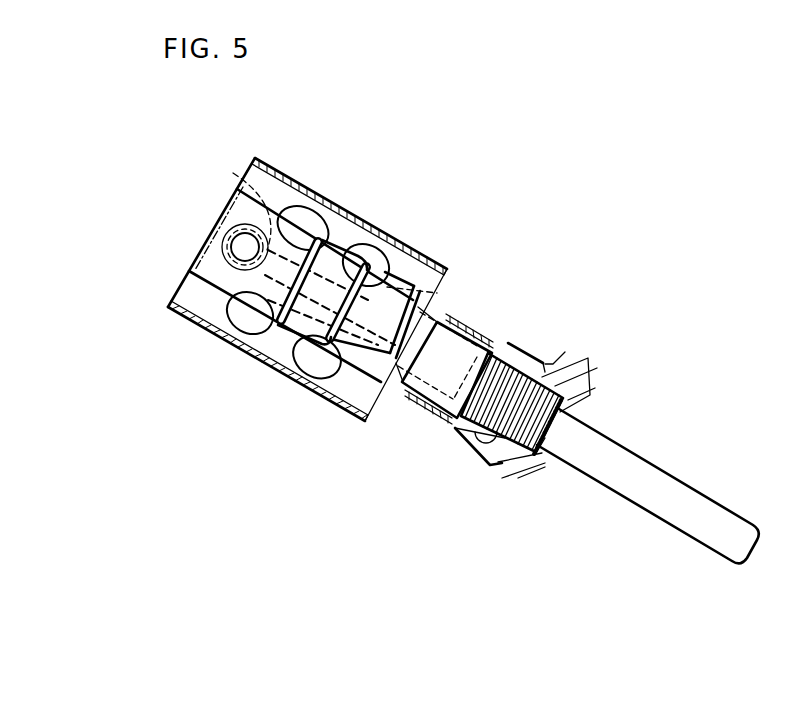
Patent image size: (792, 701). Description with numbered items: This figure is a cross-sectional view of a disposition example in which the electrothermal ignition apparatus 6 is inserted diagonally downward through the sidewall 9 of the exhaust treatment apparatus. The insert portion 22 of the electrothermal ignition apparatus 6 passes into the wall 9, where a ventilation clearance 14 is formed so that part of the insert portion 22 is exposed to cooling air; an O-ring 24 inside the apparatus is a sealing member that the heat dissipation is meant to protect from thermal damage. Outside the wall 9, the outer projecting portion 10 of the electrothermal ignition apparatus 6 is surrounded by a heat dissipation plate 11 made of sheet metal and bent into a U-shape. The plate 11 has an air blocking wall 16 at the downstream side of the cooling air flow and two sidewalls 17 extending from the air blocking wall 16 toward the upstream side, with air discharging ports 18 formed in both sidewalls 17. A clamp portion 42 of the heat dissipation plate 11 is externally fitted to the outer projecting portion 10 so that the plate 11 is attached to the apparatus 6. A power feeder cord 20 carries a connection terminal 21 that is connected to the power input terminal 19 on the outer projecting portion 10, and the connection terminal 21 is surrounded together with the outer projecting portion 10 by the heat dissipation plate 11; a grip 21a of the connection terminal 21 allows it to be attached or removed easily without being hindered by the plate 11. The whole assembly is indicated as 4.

The cable fixing structure 4 is at (732, 614).
The electrothermal ignition apparatus 6 is at (630, 505).
The wall of the exhaust treatment apparatus 9 is at (502, 468).
The outer projecting portion 10 is at (350, 368).
The heat dissipation plate 11 is at (417, 241).
The ventilation clearance 14 is at (533, 358).
The air blocking wall 16 is at (203, 288).
The sidewalls 17 is at (309, 188).
The air discharging ports 18 is at (373, 240).
The power input terminal 19 is at (240, 178).
The power feeder cord 20 is at (244, 243).
The connection terminal 21 is at (212, 259).
The grip 21a is at (233, 270).
The insert portion 22 is at (514, 452).
The O-ring 24 is at (433, 306).
The clamp portion 42 is at (432, 412).